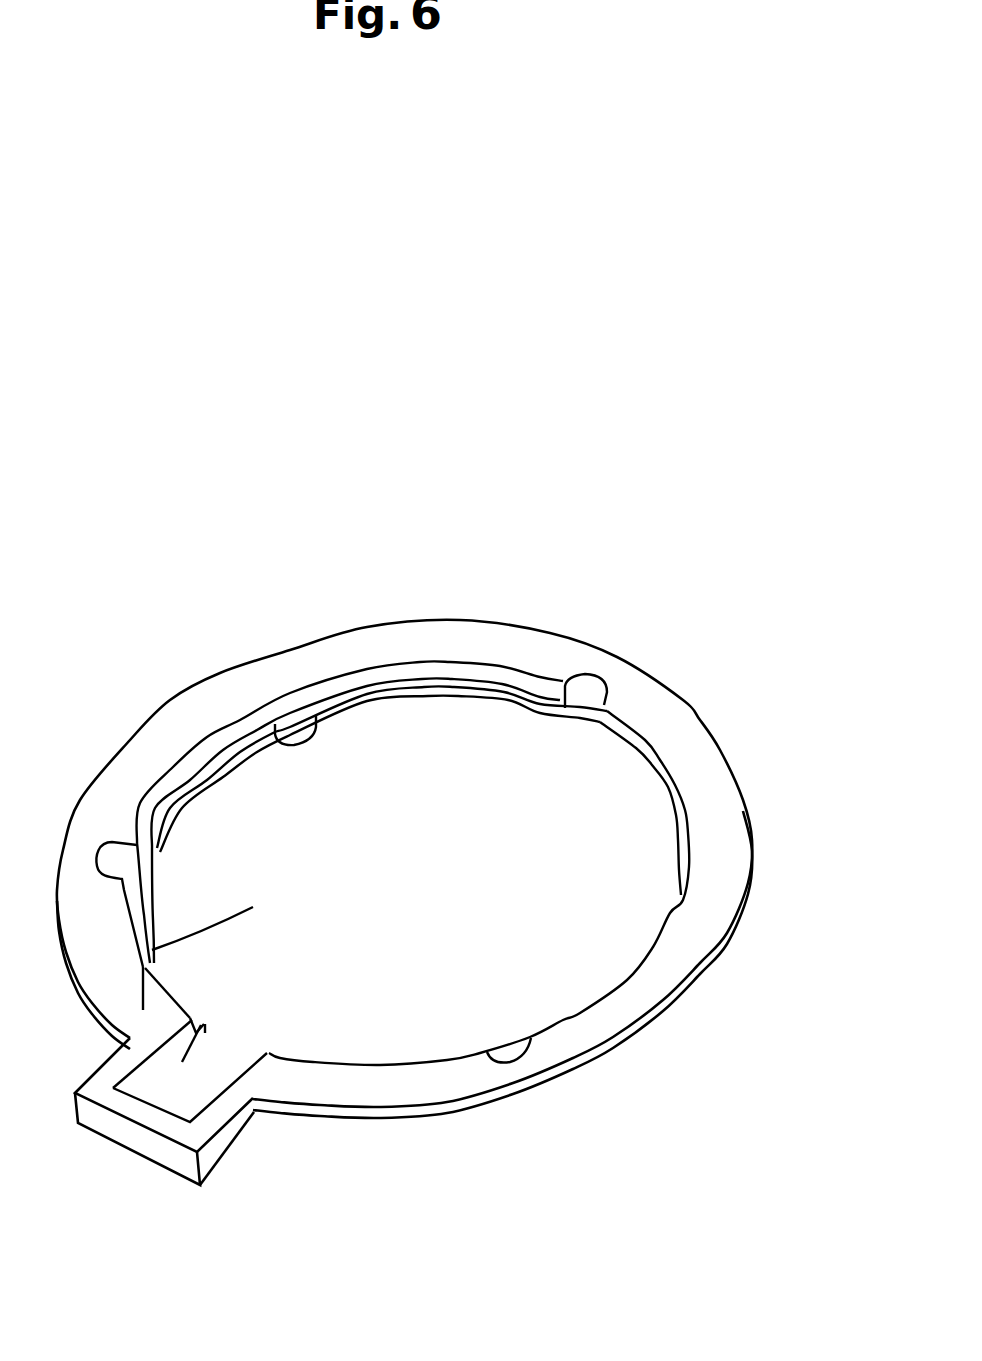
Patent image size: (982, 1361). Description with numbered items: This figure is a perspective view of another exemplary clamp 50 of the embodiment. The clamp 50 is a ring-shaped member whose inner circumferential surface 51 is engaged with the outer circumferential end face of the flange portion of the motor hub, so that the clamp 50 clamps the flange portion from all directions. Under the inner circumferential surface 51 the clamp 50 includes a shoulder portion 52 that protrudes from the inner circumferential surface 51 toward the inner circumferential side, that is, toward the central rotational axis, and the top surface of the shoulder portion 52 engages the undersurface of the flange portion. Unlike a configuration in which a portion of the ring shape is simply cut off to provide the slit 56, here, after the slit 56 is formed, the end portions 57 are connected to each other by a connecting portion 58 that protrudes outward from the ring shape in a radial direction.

The clamp 50 is at (565, 538).
The inner circumferential surface 51 is at (427, 673).
The shoulder portion 52 is at (264, 742).
The slit 56 is at (208, 1082).
The end portions 57 is at (287, 1088).
The connecting portion 58 is at (138, 1112).